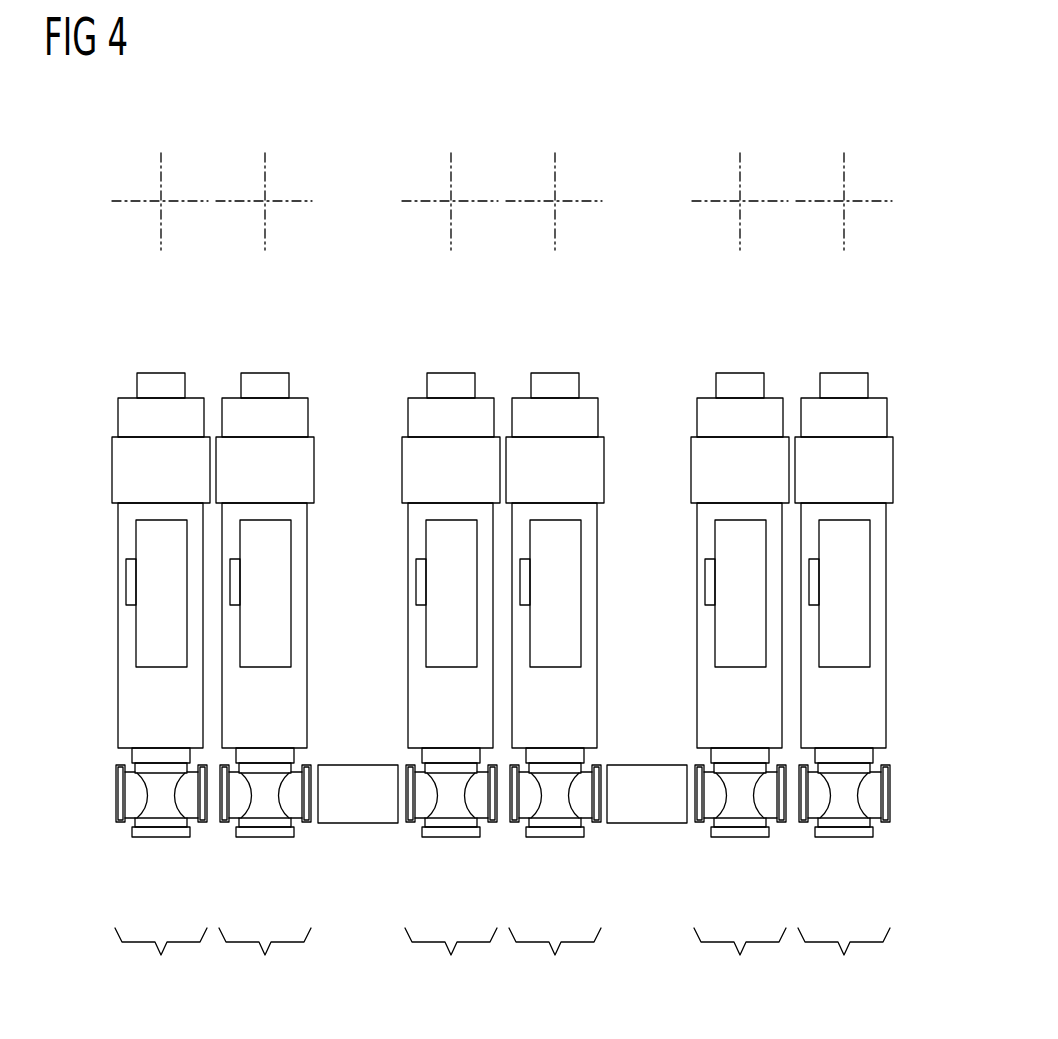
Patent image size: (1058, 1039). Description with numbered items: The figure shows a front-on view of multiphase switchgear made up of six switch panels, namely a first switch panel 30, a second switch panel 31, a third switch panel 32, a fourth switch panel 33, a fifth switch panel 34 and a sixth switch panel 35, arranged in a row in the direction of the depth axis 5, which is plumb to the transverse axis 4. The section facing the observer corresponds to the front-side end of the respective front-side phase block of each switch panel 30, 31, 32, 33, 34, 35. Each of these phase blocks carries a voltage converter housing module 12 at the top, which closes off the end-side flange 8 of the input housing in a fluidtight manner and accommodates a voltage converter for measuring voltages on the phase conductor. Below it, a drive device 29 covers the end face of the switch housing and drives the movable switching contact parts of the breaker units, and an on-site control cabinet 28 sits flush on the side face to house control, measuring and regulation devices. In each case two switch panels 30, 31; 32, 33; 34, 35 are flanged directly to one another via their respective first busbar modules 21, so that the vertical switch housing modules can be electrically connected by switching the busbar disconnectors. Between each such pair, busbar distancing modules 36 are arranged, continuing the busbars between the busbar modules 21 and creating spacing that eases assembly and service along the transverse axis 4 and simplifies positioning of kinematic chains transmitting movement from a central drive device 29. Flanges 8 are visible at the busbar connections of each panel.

The transverse axis 4 is at (163, 200).
The depth axis 5 is at (877, 203).
The flange 8 is at (120, 823).
The voltage converter housing module 12 is at (126, 397).
The first busbar module 21 is at (161, 838).
The on-site control cabinet 28 is at (118, 582).
The drive device 29 is at (123, 488).
The first switch panel 30 is at (844, 959).
The second switch panel 31 is at (740, 959).
The third switch panel 32 is at (555, 959).
The fourth switch panel 33 is at (451, 959).
The fifth switch panel 34 is at (265, 959).
The sixth switch panel 35 is at (161, 959).
The busbar distancing module 36 is at (352, 824).